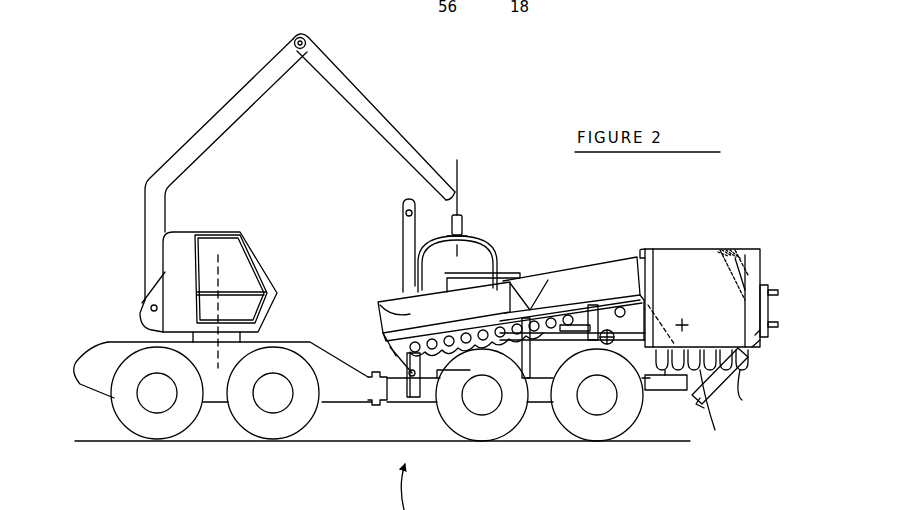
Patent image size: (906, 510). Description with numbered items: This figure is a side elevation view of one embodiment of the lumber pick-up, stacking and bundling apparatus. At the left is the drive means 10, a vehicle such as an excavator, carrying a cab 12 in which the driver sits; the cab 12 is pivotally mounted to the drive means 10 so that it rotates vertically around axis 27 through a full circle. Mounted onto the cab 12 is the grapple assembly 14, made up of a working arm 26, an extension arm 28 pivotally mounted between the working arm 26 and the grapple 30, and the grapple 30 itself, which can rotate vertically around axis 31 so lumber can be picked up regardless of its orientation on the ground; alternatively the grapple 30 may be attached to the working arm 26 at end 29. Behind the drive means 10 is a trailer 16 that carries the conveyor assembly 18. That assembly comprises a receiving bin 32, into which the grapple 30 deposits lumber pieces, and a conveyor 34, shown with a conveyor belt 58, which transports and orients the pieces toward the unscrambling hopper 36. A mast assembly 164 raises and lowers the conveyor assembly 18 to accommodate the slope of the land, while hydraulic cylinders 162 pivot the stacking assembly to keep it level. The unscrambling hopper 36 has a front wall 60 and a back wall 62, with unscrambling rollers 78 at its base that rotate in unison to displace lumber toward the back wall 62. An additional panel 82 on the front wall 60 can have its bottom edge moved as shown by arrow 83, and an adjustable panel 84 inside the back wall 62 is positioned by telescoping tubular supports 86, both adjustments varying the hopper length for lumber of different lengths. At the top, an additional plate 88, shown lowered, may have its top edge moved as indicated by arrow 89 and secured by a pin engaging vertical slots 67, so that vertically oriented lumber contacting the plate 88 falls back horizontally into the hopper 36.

The drive means 10 is at (102, 277).
The cab 12 is at (240, 268).
The grapple assembly 14 is at (242, 62).
The trailer 16 is at (541, 397).
The conveyor assembly 18 is at (556, 258).
The working arm 26 is at (200, 126).
The axis 27 is at (222, 302).
The extension arm 28 is at (370, 117).
The end 29 is at (303, 37).
The grapple 30 is at (492, 244).
The axis 31 is at (458, 170).
The receiving bin 32 is at (412, 312).
The conveyor 34 is at (610, 312).
The unscrambling hopper 36 is at (699, 268).
The conveyor belt 58 is at (578, 322).
The front wall 60 is at (648, 260).
The back wall 62 is at (753, 270).
The vertical slots 67 is at (720, 254).
The unscrambling rollers 78 is at (738, 393).
The additional panel 82 is at (651, 309).
The arrow 83 is at (653, 373).
The adjustable panel 84 is at (760, 340).
The telescoping tubular supports 86 is at (780, 322).
The additional plate 88 is at (735, 268).
The arrow 89 is at (743, 250).
The hydraulic cylinders 162 is at (717, 392).
The mast assembly 164 is at (395, 232).